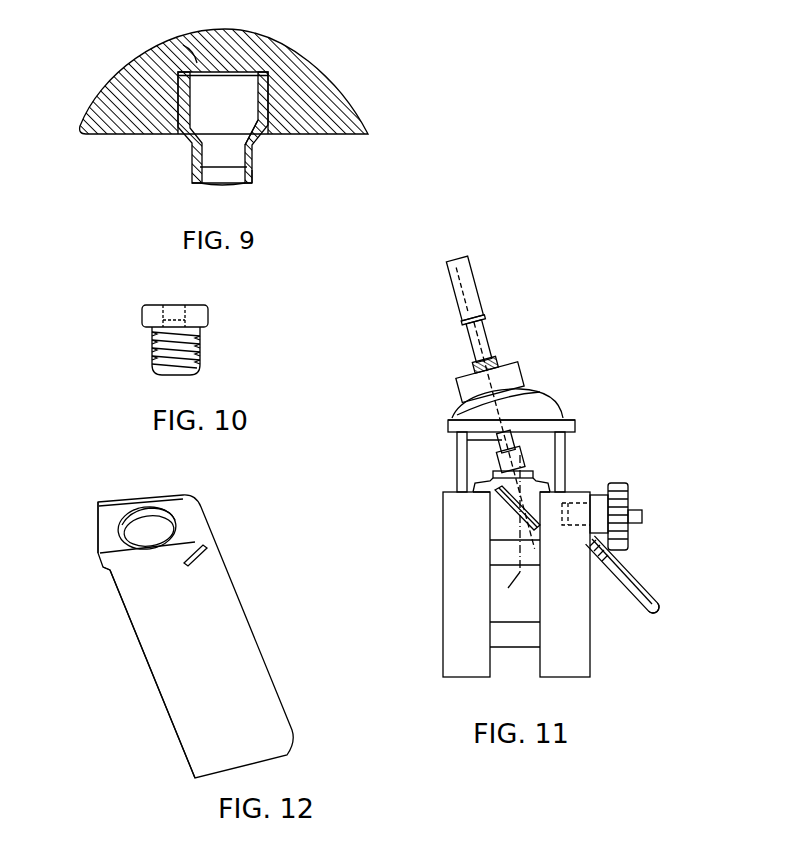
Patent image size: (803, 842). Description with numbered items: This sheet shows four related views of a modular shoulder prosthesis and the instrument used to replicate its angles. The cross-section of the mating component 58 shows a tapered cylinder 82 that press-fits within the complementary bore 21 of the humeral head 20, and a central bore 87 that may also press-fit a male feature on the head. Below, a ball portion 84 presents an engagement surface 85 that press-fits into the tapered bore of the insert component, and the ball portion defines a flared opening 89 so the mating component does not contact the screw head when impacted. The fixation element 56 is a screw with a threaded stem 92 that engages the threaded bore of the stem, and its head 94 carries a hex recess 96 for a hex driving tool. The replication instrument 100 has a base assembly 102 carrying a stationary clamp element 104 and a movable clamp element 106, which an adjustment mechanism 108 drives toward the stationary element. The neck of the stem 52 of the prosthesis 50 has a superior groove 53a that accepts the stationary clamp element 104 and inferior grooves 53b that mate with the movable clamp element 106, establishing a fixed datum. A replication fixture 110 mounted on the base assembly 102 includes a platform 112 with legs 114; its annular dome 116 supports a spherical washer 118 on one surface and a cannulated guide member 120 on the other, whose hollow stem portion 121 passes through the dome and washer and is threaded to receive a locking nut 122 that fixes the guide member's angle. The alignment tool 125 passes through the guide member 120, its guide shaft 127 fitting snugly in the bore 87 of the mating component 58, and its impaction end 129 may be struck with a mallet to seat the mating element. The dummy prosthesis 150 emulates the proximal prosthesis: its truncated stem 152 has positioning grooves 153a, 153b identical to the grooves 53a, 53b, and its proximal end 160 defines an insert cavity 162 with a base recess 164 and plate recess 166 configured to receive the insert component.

In FIG. 9, the humeral head 20 is at (94, 102).
In FIG. 9, the complementary bore 21 is at (183, 45).
In FIG. 9, the tapered cylinder 82 is at (270, 110).
In FIG. 9, the central bore 87 is at (245, 145).
In FIG. 9, the mating component 58 is at (280, 153).
In FIG. 11, the mating component 58 is at (510, 459).
In FIG. 9, the engagement surface 85 is at (252, 168).
In FIG. 9, the ball portion 84 is at (262, 190).
In FIG. 9, the flared opening 89 is at (212, 184).
In FIG. 10, the fixation element 56 is at (175, 323).
In FIG. 10, the head 94 is at (142, 321).
In FIG. 10, the hex recess 96 is at (168, 303).
In FIG. 10, the threaded stem 92 is at (200, 361).
In FIG. 12, the dummy prosthesis 150 is at (165, 614).
In FIG. 12, the truncated stem 152 is at (133, 607).
In FIG. 12, the positioning groove 153a is at (110, 567).
In FIG. 12, the positioning groove 153b is at (197, 558).
In FIG. 12, the bracket head 160 is at (187, 512).
In FIG. 12, the insert cavity 162 is at (110, 528).
In FIG. 12, the base recess 164 is at (140, 520).
In FIG. 12, the plate recess 166 is at (158, 507).
In FIG. 11, the instrument 100 is at (522, 454).
In FIG. 11, the base assembly 102 is at (595, 642).
In FIG. 11, the stationary clamp element 104 is at (492, 477).
In FIG. 11, the movable clamp element 106 is at (548, 488).
In FIG. 11, the adjustment mechanism 108 is at (628, 505).
In FIG. 11, the replication fixture 110 is at (578, 417).
In FIG. 11, the platform 112 is at (452, 422).
In FIG. 11, the legs 114 is at (460, 450).
In FIG. 11, the annular dome 116 is at (545, 410).
In FIG. 11, the spherical washer 118 is at (533, 388).
In FIG. 11, the cannulated guide member 120 is at (485, 364).
In FIG. 11, the hollow stem portion 121 is at (475, 365).
In FIG. 11, the locking nut 122 is at (490, 382).
In FIG. 11, the alignment tool 125 is at (508, 394).
In FIG. 11, the guide shaft 127 is at (467, 440).
In FIG. 11, the impaction end 129 is at (509, 278).
In FIG. 11, the stem 52 is at (627, 568).
In FIG. 11, the prosthesis 50 is at (655, 607).
In FIG. 11, the positioning groove 53a is at (470, 488).
In FIG. 11, the positioning grooves 53b is at (500, 503).